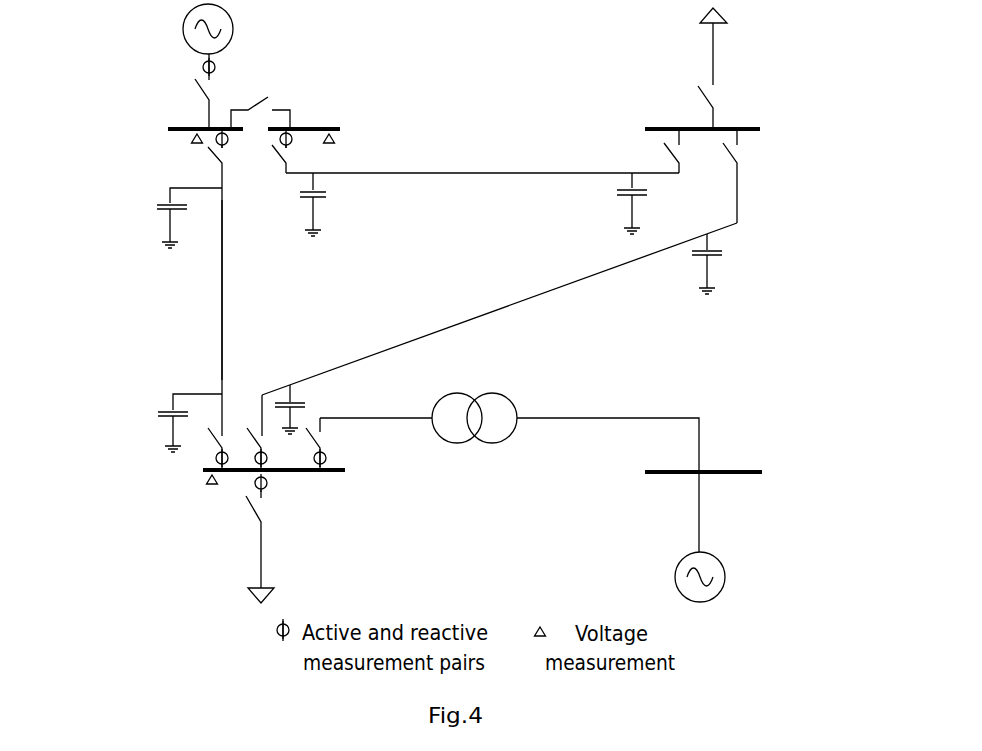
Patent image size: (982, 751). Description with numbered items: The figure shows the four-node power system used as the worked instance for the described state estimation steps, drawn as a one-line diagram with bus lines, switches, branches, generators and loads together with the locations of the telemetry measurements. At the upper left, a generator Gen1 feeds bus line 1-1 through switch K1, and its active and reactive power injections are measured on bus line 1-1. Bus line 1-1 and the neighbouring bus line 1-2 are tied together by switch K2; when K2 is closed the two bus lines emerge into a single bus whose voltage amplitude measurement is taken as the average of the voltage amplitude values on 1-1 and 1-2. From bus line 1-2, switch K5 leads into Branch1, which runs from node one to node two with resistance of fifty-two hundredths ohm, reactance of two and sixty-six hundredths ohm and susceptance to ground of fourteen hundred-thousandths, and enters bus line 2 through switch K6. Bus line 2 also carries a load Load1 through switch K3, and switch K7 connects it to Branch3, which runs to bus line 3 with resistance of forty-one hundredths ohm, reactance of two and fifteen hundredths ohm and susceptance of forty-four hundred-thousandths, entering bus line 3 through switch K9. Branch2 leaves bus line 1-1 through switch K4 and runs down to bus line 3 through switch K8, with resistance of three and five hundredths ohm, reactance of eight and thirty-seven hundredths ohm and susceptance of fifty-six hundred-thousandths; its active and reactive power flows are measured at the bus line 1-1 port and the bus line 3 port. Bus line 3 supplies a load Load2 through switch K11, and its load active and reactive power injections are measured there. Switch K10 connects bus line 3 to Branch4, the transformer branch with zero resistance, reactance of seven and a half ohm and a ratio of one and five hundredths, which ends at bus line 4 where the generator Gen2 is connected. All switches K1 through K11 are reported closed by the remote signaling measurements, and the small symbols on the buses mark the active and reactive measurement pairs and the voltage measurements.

The bus line 1-1 is at (187, 127).
The bus line 1-2 is at (327, 127).
The bus line 2 is at (721, 126).
The bus line 3 is at (261, 477).
The bus line 4 is at (719, 484).
The switch K1 is at (221, 104).
The switch K2 is at (269, 107).
The switch K3 is at (727, 107).
The switch K4 is at (233, 290).
The switch K5 is at (299, 161).
The switch K6 is at (692, 151).
The switch K7 is at (748, 176).
The switch K8 is at (230, 449).
The switch K9 is at (271, 432).
The switch K10 is at (341, 444).
The switch K11 is at (284, 539).
The generator Gen1 is at (238, 42).
The generator Gen2 is at (738, 577).
The load Load1 is at (745, 46).
The load Load2 is at (294, 585).
The Branch 1 Branch1 is at (482, 176).
The Branch 2 Branch2 is at (199, 290).
The Branch 3 Branch3 is at (499, 309).
The Branch 4 Branch4 is at (509, 460).